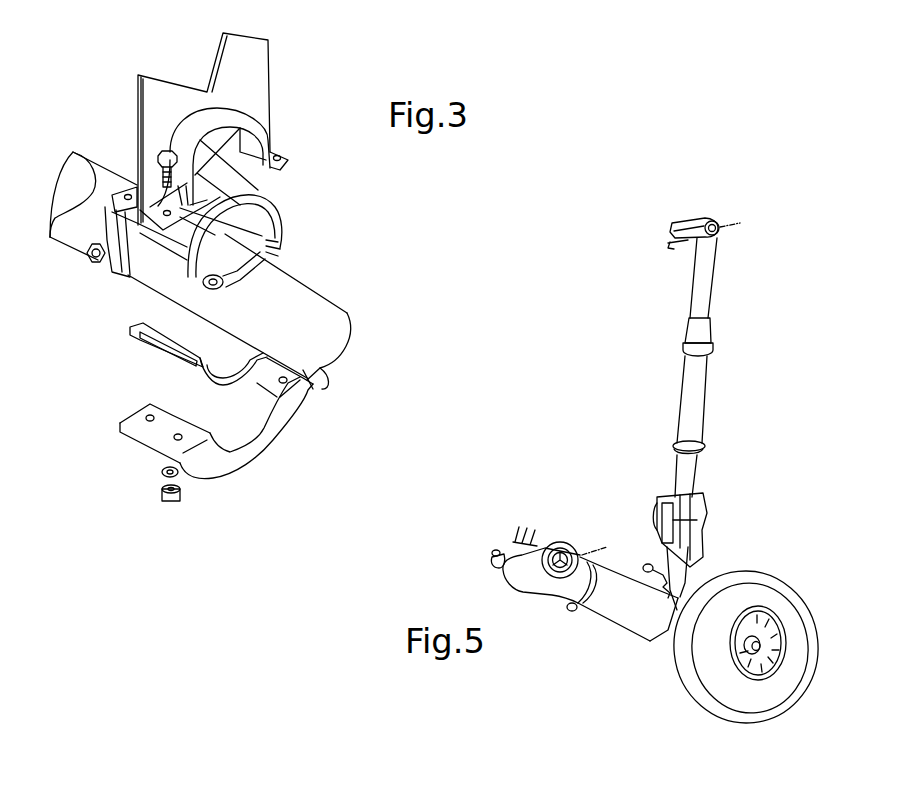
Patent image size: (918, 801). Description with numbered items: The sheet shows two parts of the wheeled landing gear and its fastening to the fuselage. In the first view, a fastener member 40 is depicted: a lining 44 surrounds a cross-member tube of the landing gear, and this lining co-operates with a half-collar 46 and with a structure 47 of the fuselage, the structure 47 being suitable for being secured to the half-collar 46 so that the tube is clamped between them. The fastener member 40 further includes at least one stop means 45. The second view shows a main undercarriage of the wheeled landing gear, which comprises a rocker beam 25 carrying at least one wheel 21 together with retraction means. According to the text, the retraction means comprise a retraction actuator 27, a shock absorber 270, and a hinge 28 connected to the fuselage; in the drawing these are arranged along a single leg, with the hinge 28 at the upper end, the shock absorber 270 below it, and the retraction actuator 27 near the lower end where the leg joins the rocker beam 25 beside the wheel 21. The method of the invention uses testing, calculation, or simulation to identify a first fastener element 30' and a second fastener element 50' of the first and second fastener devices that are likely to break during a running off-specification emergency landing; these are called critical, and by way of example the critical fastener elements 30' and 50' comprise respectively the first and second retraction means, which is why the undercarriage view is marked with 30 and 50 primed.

In FIG. 3, the fastener member 40 is at (290, 38).
In FIG. 3, the lining 44 is at (265, 216).
In FIG. 3, the stop means 45 is at (75, 202).
In FIG. 3, the half-collar 46 is at (250, 453).
In FIG. 3, the structure of the fuselage 47 is at (252, 90).
In FIG. 5, the first fastener element 30' is at (665, 474).
In FIG. 5, the second fastener element 50' is at (665, 474).
In FIG. 5, the landing gear 30 is at (665, 474).
In FIG. 5, the strut assembly 50 is at (665, 474).
In FIG. 5, the hinge 28 is at (722, 230).
In FIG. 5, the shock absorber 270 is at (681, 396).
In FIG. 5, the retraction actuator 27 is at (693, 483).
In FIG. 5, the wheel 21 is at (757, 585).
In FIG. 5, the rocker beam 25 is at (625, 613).